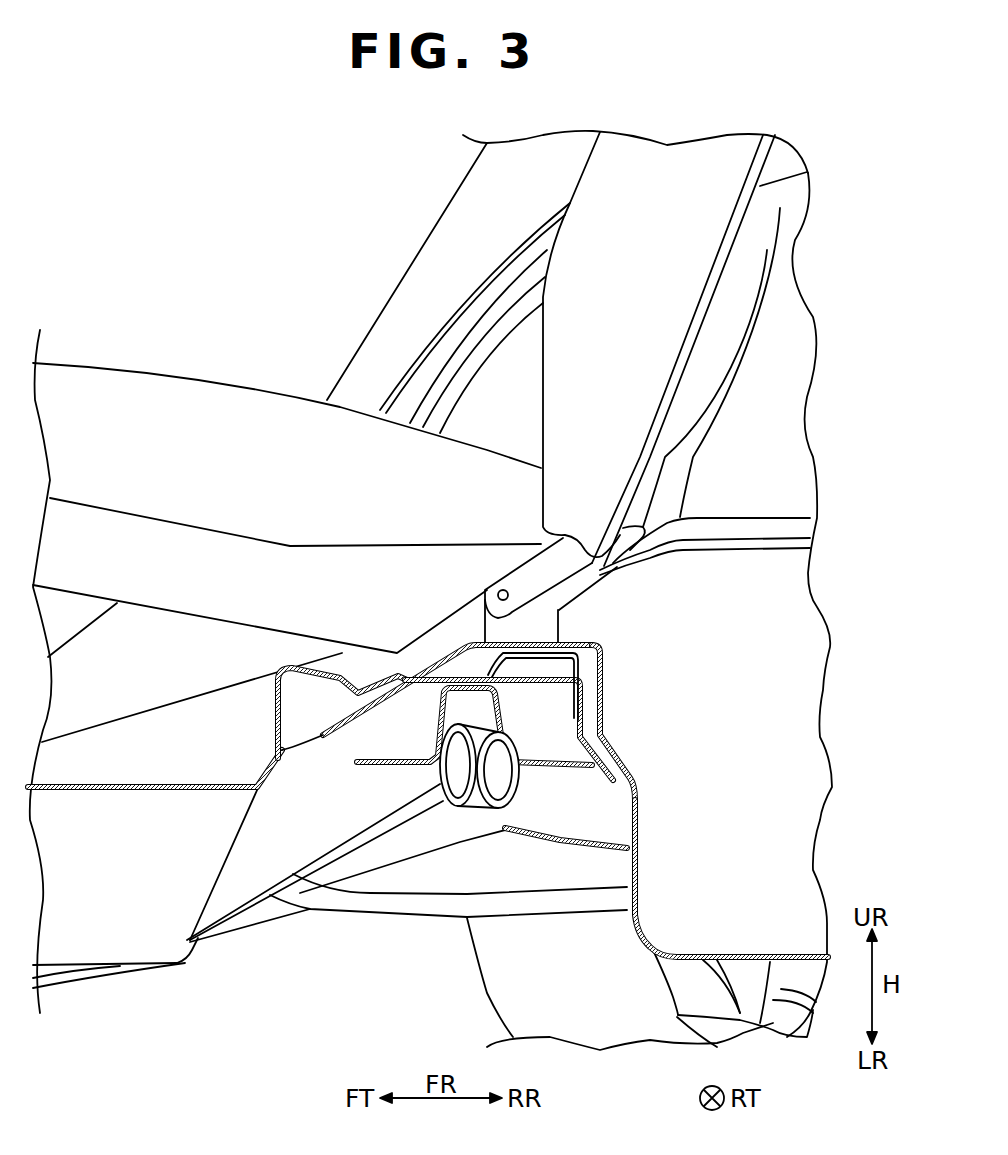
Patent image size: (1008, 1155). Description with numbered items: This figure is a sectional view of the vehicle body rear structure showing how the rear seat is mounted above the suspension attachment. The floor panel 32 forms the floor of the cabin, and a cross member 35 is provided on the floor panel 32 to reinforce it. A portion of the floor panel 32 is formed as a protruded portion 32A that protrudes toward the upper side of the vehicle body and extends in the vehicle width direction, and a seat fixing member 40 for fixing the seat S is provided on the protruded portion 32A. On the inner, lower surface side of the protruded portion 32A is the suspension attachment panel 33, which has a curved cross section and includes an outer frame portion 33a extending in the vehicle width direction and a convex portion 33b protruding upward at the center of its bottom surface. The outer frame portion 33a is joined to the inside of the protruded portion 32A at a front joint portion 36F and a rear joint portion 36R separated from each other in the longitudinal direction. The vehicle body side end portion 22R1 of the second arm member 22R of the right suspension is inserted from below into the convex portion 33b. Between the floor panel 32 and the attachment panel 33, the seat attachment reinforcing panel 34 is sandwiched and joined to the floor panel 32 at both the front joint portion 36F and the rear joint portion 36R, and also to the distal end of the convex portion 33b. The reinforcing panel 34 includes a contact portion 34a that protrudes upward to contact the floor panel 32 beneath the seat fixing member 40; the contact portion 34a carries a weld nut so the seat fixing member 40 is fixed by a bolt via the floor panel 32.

The seat S is at (173, 403).
The seat fixing member 40 is at (493, 628).
The floor panel 32 is at (117, 783).
The protruded portion 32A is at (604, 629).
The suspension attachment panel 33 is at (455, 851).
The outer frame portion 33a is at (355, 767).
The convex portion 33b is at (410, 773).
The seat attachment reinforcing panel 34 is at (580, 730).
The contact portion 34a is at (578, 670).
The cross member 35 is at (276, 720).
The front joint portion 36F is at (321, 742).
The rear joint portion 36R is at (627, 767).
The second arm member 22R is at (557, 810).
The vehicle body side end portion 22R1 is at (503, 777).